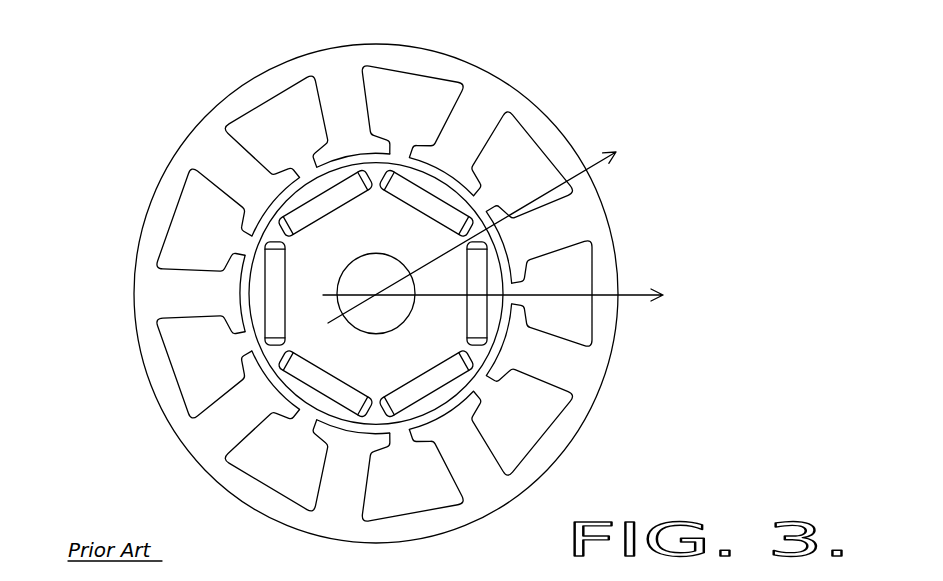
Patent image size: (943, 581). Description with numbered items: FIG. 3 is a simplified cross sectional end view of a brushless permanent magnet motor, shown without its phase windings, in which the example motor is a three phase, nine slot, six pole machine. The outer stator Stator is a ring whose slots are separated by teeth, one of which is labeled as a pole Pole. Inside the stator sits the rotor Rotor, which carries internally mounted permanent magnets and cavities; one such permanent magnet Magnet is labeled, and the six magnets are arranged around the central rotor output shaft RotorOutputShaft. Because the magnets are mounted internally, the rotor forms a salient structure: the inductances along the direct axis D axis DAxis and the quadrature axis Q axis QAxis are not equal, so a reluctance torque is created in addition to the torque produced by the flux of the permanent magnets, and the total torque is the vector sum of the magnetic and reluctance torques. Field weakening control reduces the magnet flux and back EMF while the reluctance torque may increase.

The stator Stator is at (492, 90).
The pole Pole is at (243, 183).
The rotor Rotor is at (258, 296).
The permanent magnet Magnet is at (317, 207).
The rotor output shaft RotorOutputShaft is at (388, 315).
The D axis DAxis is at (517, 313).
The Q axis QAxis is at (510, 227).